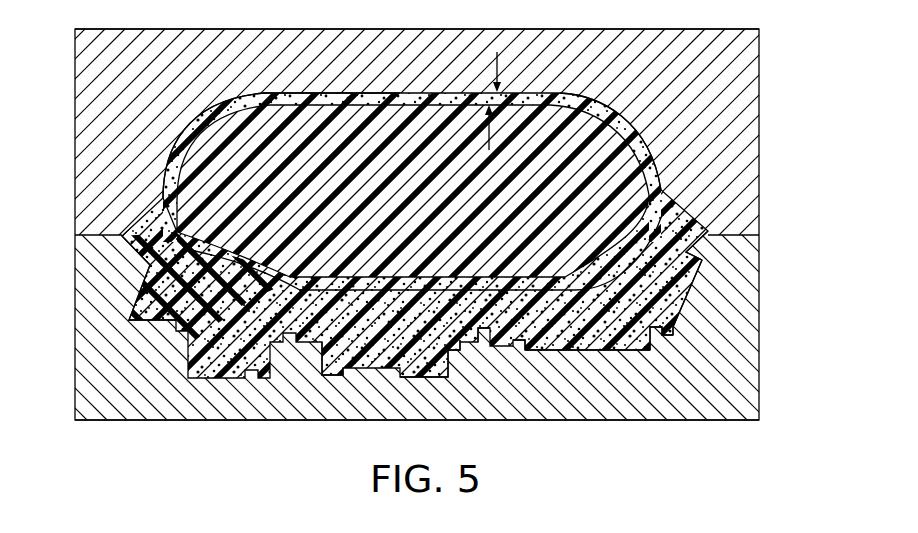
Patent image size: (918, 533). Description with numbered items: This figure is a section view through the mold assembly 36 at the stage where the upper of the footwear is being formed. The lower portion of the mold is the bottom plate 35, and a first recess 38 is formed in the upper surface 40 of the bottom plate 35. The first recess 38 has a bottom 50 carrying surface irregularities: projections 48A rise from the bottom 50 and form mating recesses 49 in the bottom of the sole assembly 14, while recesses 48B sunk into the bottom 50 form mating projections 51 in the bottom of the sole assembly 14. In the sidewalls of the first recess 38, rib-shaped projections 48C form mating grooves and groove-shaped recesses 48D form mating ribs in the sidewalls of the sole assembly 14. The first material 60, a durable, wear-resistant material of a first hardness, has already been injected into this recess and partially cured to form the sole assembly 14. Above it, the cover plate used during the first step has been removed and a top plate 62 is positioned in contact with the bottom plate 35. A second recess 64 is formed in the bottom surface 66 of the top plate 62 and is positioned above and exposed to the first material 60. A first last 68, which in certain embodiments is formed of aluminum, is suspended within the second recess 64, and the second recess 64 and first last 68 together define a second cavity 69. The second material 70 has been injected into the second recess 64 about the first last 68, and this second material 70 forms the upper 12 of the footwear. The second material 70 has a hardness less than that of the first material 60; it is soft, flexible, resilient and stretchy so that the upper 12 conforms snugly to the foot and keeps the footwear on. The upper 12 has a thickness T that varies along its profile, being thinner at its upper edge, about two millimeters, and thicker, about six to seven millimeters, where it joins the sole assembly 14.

The upper 12 is at (445, 224).
The sole assembly 14 is at (671, 329).
The bottom plate 35 is at (750, 372).
The mold assembly 36 is at (810, 142).
The first recess 38 is at (586, 348).
The upper surface 40 is at (122, 235).
The projections 48A is at (484, 326).
The recesses 48B is at (336, 370).
The projections 48C is at (201, 208).
The recesses 48D is at (131, 319).
The mating recesses 49 is at (526, 349).
The bottom 50 is at (453, 341).
The mating projections 51 is at (428, 368).
The first material 60 is at (687, 327).
The top plate 62 is at (757, 49).
The second recess 64 is at (543, 104).
The bottom surface 66 is at (733, 247).
The first last 68 is at (218, 155).
The second cavity 69 is at (616, 118).
The second material 70 is at (316, 91).
The thickness T is at (483, 97).